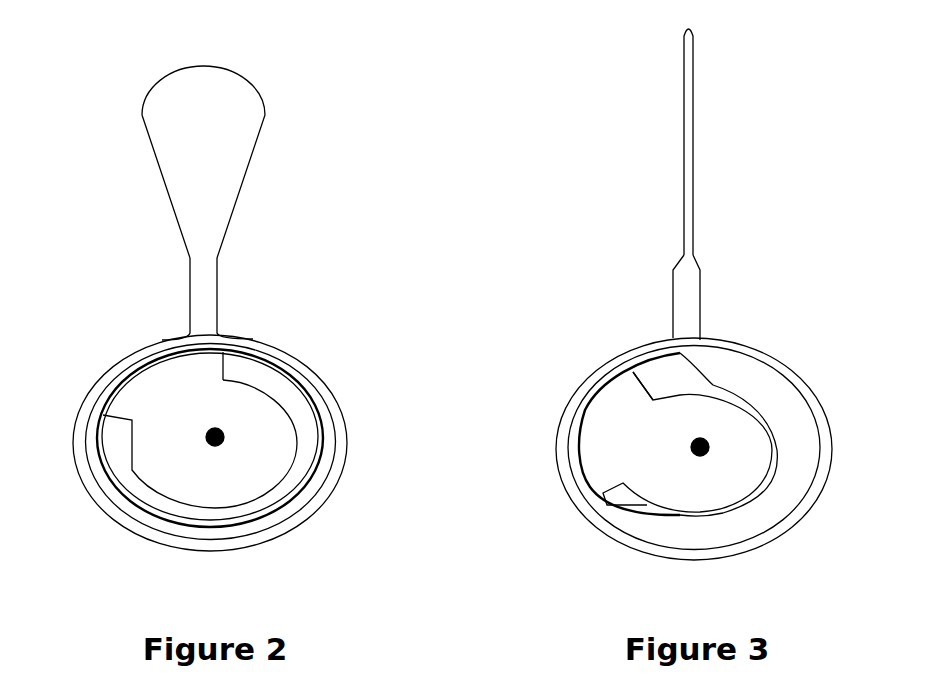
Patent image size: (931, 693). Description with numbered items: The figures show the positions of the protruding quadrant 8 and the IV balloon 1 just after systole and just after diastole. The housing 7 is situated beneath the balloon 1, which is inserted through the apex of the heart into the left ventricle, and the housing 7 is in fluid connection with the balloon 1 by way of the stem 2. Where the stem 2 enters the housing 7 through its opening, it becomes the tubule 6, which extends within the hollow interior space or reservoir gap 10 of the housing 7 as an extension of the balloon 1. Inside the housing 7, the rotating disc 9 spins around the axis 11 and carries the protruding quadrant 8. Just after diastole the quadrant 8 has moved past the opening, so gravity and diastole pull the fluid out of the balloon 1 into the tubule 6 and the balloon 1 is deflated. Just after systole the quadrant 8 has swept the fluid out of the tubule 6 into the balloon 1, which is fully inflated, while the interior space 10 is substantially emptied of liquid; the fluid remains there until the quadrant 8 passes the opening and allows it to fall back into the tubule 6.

In FIG. 2, the IV balloon 1 is at (223, 108).
In FIG. 3, the IV balloon 1 is at (684, 109).
In FIG. 2, the stem 2 is at (217, 294).
In FIG. 3, the stem 2 is at (668, 293).
In FIG. 2, the tubule 6 is at (223, 352).
In FIG. 3, the tubule 6 is at (620, 365).
In FIG. 2, the housing 7 is at (142, 343).
In FIG. 3, the housing 7 is at (760, 348).
In FIG. 2, the protruding quadrant 8 is at (145, 382).
In FIG. 3, the protruding quadrant 8 is at (625, 405).
In FIG. 2, the rotating disc 9 is at (222, 482).
In FIG. 3, the rotating disc 9 is at (707, 493).
In FIG. 2, the hollow interior space 10 is at (307, 456).
In FIG. 3, the hollow interior space 10 is at (780, 455).
In FIG. 2, the axis 11 is at (205, 443).
In FIG. 3, the axis 11 is at (700, 440).